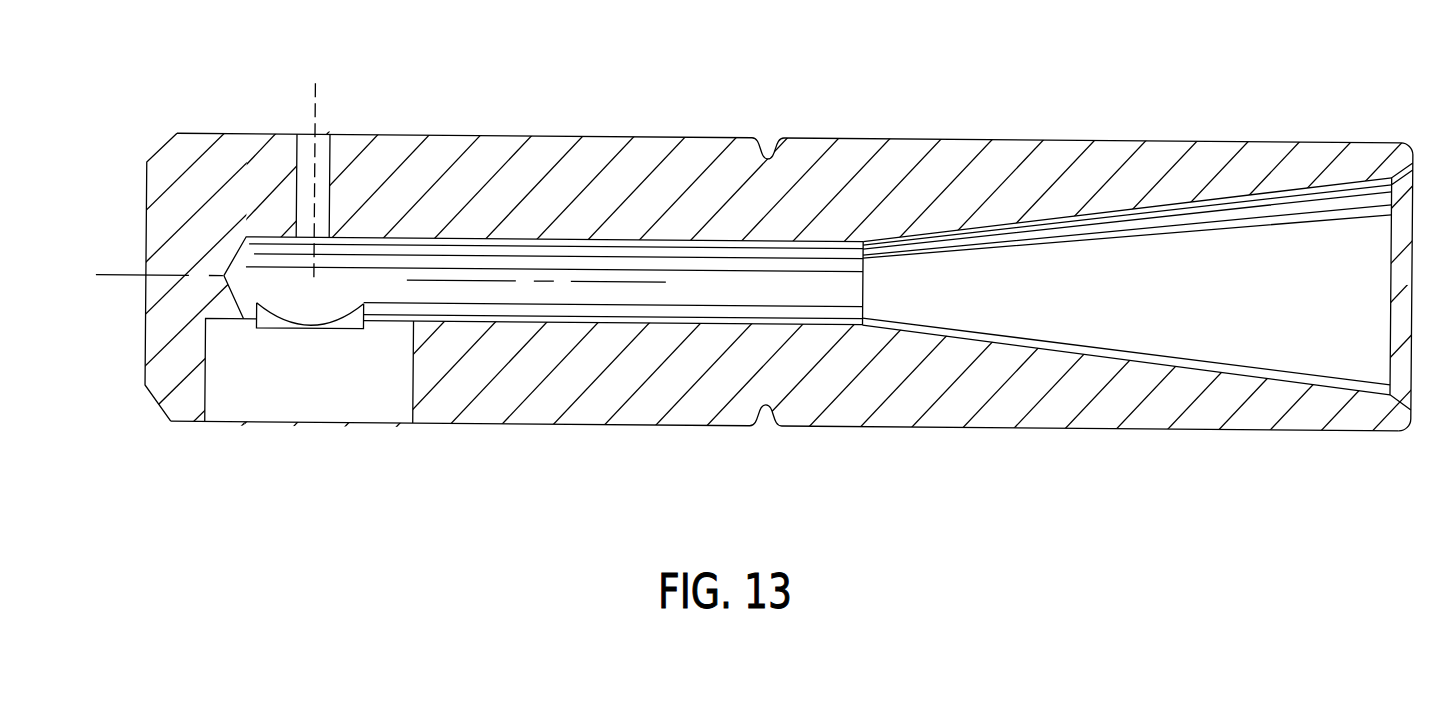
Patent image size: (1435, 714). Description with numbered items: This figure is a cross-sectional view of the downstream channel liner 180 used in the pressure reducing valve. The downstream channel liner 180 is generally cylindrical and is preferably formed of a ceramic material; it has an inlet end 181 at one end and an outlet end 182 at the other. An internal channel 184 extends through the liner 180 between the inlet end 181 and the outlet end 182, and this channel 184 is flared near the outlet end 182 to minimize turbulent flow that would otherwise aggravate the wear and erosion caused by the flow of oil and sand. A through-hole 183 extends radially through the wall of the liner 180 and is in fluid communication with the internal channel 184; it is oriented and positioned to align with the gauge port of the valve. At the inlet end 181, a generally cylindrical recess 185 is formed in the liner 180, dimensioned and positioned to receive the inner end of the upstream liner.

The downstream channel liner 180 is at (1166, 124).
The inlet end 181 is at (178, 157).
The outlet end 182 is at (1362, 153).
The through-hole 183 is at (298, 128).
The internal channel 184 is at (1050, 338).
The recess 185 is at (262, 410).